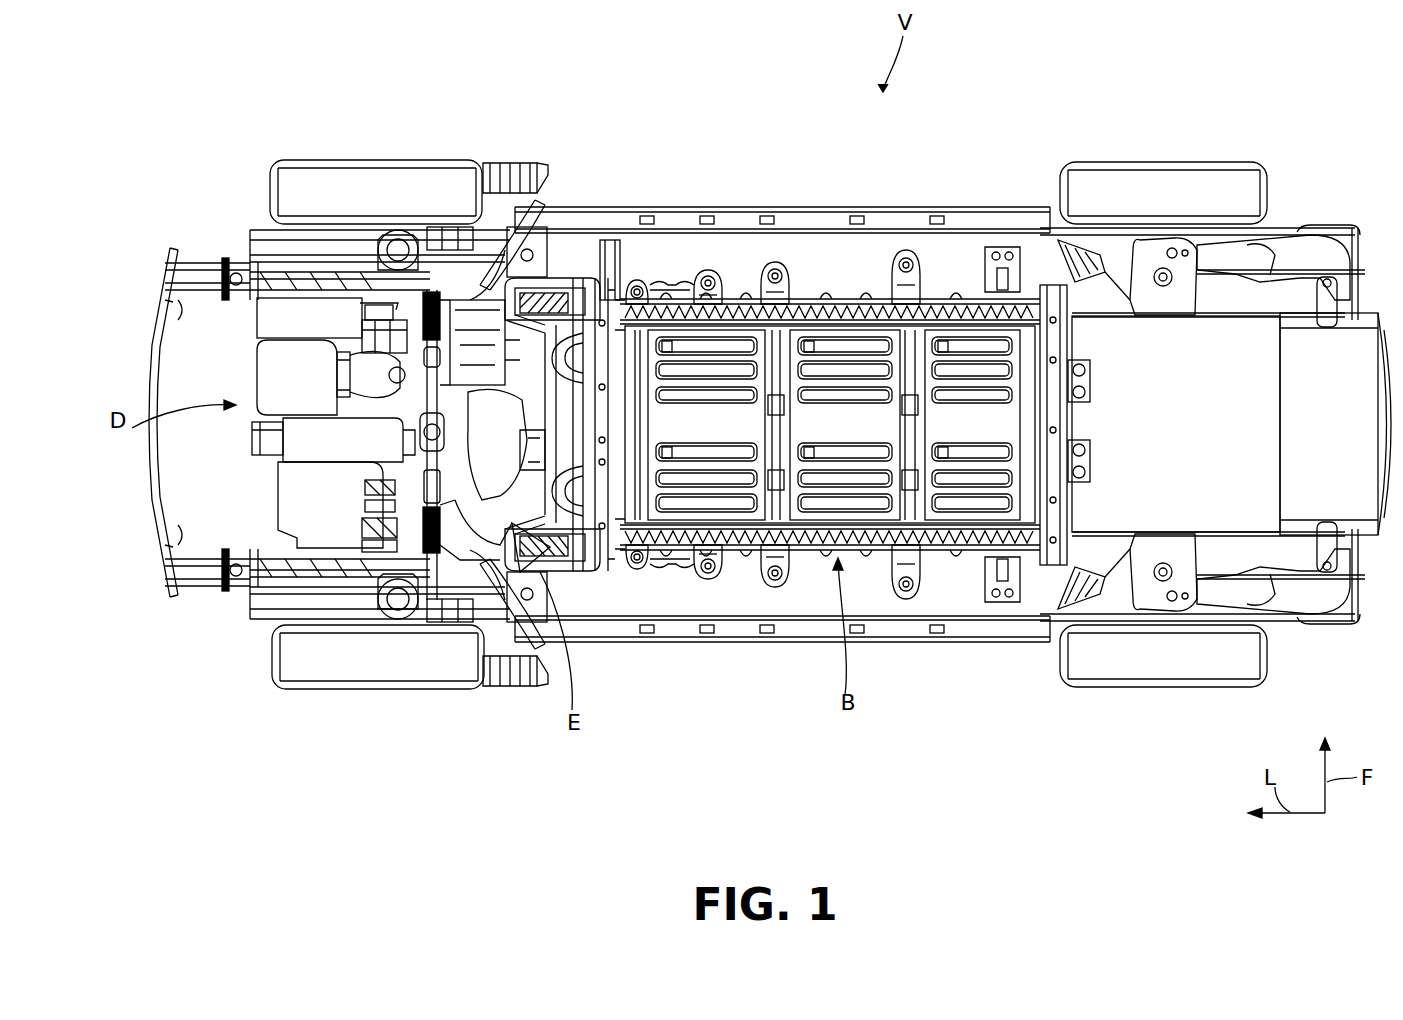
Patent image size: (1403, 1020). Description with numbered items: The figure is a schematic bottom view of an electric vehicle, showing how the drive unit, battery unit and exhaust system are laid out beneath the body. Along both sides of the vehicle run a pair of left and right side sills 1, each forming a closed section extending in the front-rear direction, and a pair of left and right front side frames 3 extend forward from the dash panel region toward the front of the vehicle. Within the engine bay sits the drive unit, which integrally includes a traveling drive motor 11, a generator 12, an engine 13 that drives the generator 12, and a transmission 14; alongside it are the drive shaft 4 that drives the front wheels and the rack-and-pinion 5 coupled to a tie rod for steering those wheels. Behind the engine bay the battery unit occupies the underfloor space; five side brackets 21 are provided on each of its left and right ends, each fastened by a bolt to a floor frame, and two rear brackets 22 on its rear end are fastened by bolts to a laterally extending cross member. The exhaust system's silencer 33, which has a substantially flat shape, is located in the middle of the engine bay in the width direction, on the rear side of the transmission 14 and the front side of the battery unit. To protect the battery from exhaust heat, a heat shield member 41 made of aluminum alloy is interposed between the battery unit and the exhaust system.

The side sill 1 is at (740, 225).
The front side frame 3 is at (240, 272).
The drive shaft 4 is at (395, 245).
The rack-and-pinion 5 is at (423, 470).
The traveling drive motor 11 is at (280, 510).
The generator 12 is at (258, 322).
The engine 13 is at (258, 380).
The transmission 14 is at (262, 452).
The side bracket 21 is at (775, 262).
The rear bracket 22 is at (1092, 473).
The silencer 33 is at (540, 448).
The heat shield member 41 is at (611, 258).